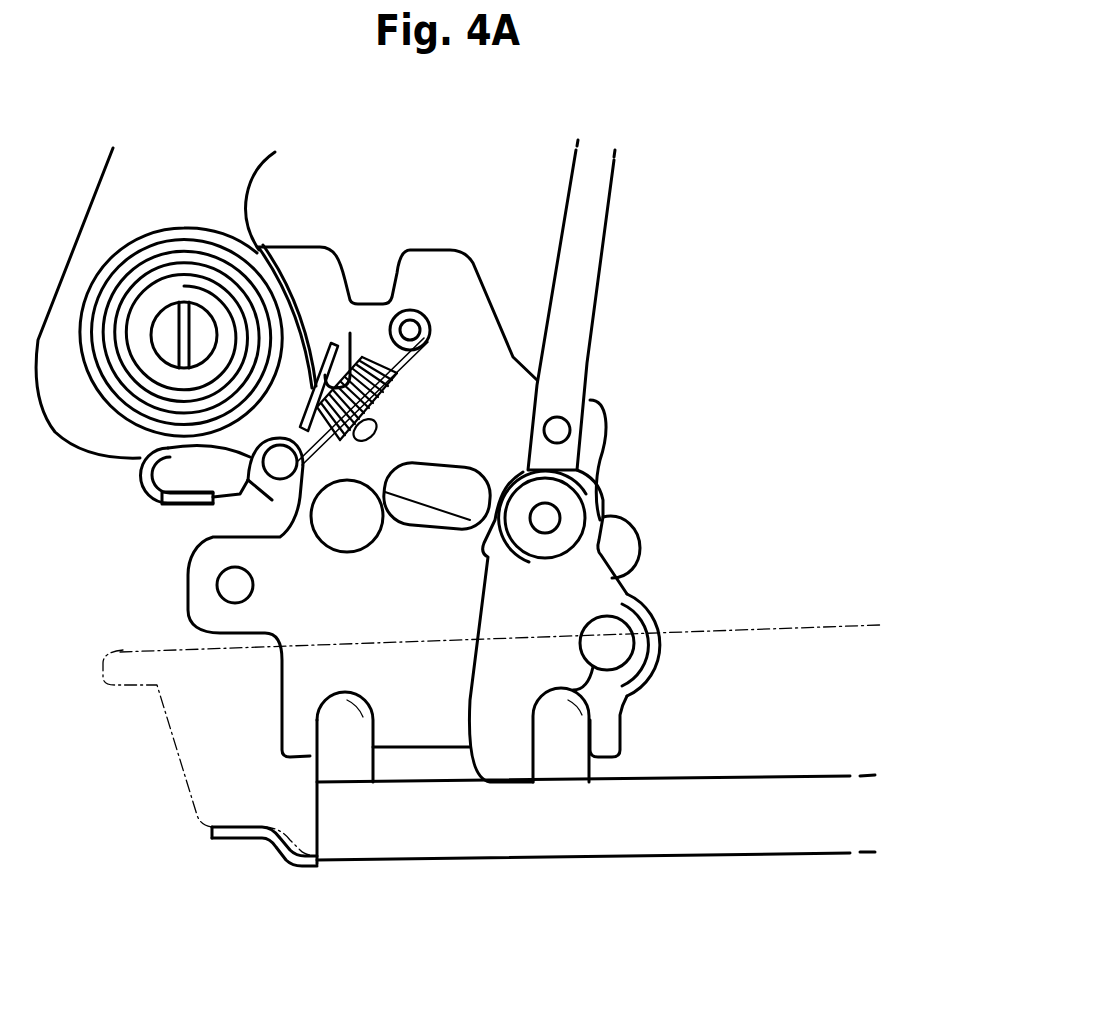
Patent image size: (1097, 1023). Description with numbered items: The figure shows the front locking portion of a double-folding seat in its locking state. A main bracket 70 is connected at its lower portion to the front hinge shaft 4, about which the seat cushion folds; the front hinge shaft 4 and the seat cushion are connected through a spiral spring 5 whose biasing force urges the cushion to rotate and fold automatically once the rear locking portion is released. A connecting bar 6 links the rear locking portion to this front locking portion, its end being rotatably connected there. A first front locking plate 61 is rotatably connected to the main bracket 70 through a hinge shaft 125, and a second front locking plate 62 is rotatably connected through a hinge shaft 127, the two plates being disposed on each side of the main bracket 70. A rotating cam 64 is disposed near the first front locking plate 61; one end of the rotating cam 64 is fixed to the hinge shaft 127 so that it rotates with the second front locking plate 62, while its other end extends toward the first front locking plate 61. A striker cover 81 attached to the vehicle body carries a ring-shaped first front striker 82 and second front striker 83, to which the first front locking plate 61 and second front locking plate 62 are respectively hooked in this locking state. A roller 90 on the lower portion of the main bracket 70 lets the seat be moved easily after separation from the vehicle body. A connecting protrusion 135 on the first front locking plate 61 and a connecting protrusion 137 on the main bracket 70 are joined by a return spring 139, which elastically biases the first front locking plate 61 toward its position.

The front hinge shaft 4 is at (168, 330).
The spiral spring 5 is at (97, 397).
The connecting bar 6 is at (592, 257).
The first front locking plate 61 is at (271, 487).
The second front locking plate 62 is at (567, 600).
The rotating cam 64 is at (423, 515).
The main bracket 70 is at (268, 592).
The striker cover 81 is at (520, 858).
The first front striker 82 is at (337, 778).
The second front striker 83 is at (568, 773).
The roller 90 is at (663, 640).
The hinge shaft 125 is at (333, 537).
The hinge shaft 127 is at (550, 517).
The connecting protrusion 135 is at (163, 493).
The connecting protrusion 137 is at (413, 312).
The return spring 139 is at (372, 345).